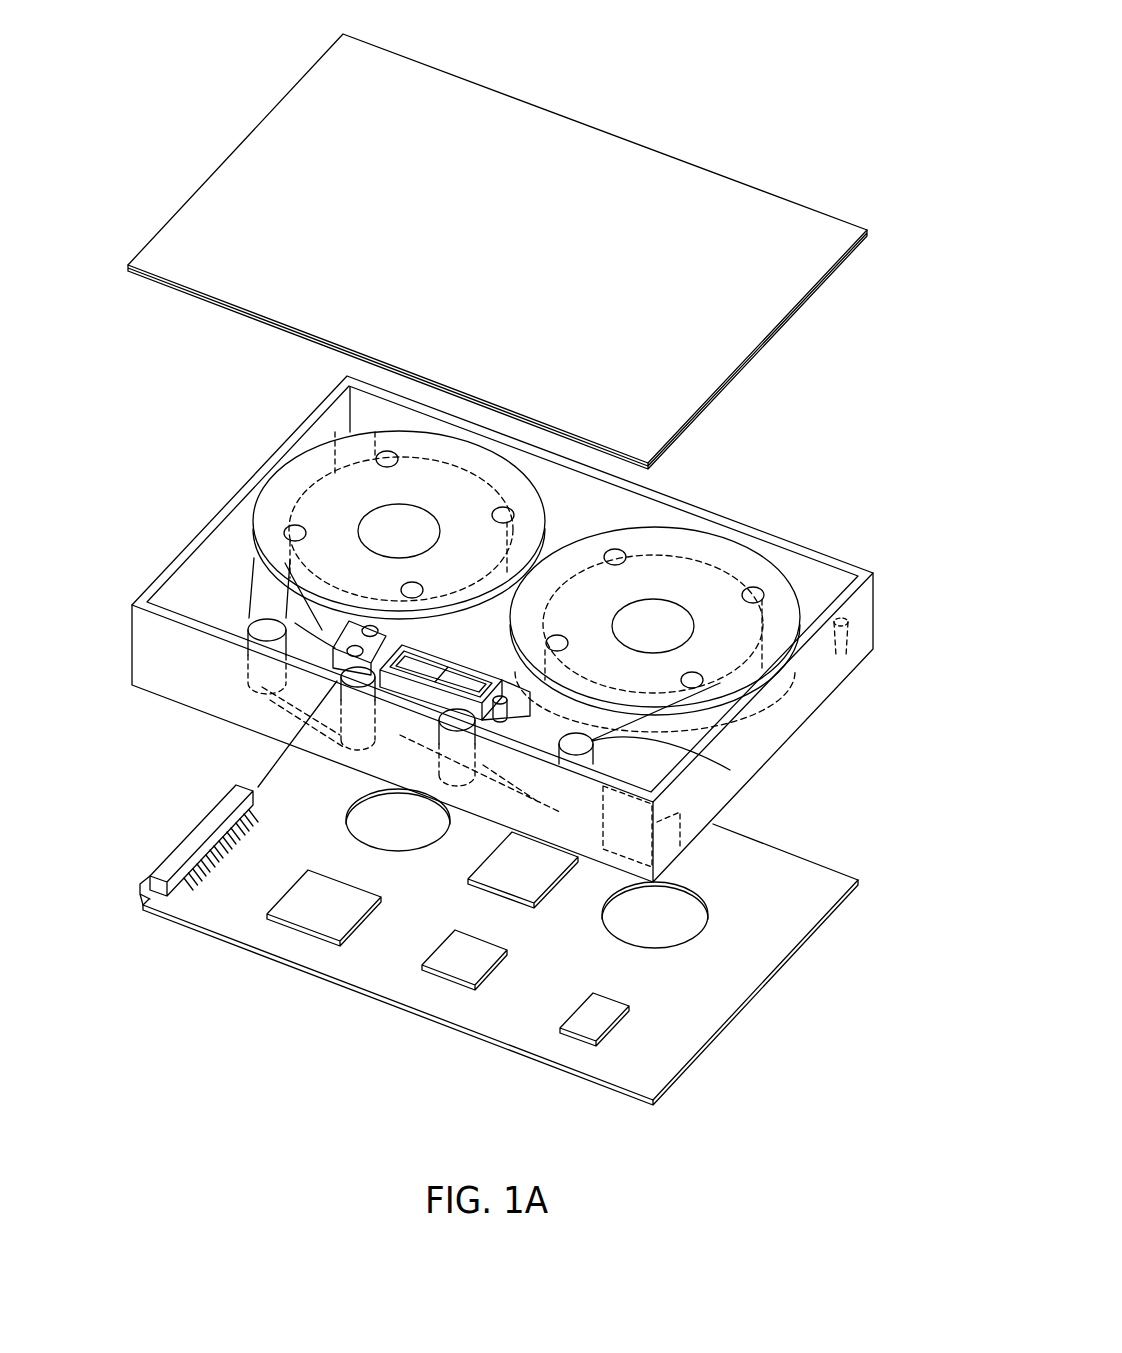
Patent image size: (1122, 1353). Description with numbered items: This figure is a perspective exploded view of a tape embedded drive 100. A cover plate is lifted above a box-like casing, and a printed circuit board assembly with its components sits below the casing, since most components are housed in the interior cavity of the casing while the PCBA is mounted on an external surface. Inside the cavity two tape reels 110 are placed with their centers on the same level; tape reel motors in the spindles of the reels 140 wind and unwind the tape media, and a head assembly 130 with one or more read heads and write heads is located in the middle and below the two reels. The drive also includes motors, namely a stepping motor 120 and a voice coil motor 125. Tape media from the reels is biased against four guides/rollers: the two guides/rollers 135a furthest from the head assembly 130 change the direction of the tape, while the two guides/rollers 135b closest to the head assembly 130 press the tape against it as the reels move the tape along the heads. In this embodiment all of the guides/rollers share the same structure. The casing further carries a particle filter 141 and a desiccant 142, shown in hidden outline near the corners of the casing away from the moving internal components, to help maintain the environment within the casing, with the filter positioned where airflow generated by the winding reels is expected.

The tape embedded drive 100 is at (772, 108).
The tape reel 110 is at (455, 441).
The stepping motor 120 is at (337, 640).
The voice coil motor 125 is at (413, 657).
The head assembly 130 is at (413, 648).
The tape guides/rollers 135a is at (255, 628).
The tape guides/rollers 135b is at (343, 669).
The reels 140 is at (366, 513).
The particle filter 141 is at (848, 634).
The desiccant 142 is at (667, 820).